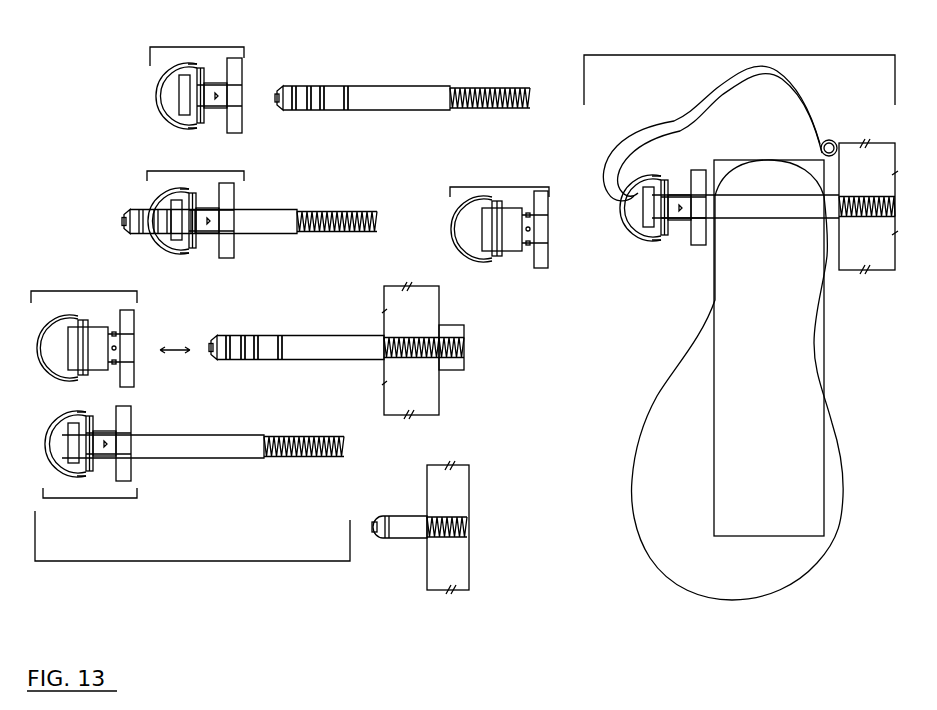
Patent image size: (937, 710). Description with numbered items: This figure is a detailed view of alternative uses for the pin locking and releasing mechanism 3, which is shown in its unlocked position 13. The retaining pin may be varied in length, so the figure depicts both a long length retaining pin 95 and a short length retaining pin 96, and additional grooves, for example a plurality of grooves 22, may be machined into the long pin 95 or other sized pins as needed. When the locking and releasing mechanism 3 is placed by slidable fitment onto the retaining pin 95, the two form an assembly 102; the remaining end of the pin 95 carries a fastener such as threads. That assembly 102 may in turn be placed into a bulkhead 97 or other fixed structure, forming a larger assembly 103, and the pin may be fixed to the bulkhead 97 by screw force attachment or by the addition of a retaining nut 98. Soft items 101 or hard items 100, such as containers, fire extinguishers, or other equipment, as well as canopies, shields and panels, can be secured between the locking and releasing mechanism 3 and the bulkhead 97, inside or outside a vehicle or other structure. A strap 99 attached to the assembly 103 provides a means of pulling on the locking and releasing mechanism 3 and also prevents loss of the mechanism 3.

The locking and releasing mechanism 3 is at (199, 44).
The unlocked position 13 is at (498, 184).
The grooves 22 is at (342, 82).
The long length retaining pin 95 is at (377, 90).
The short length retaining pin 96 is at (415, 520).
The bulkhead 97 is at (422, 388).
The retaining nut 98 is at (455, 362).
The strap 99 is at (685, 113).
The hard item 100 is at (740, 400).
The soft item 101 is at (641, 543).
The assembly 102 is at (191, 560).
The assembly 103 is at (733, 52).